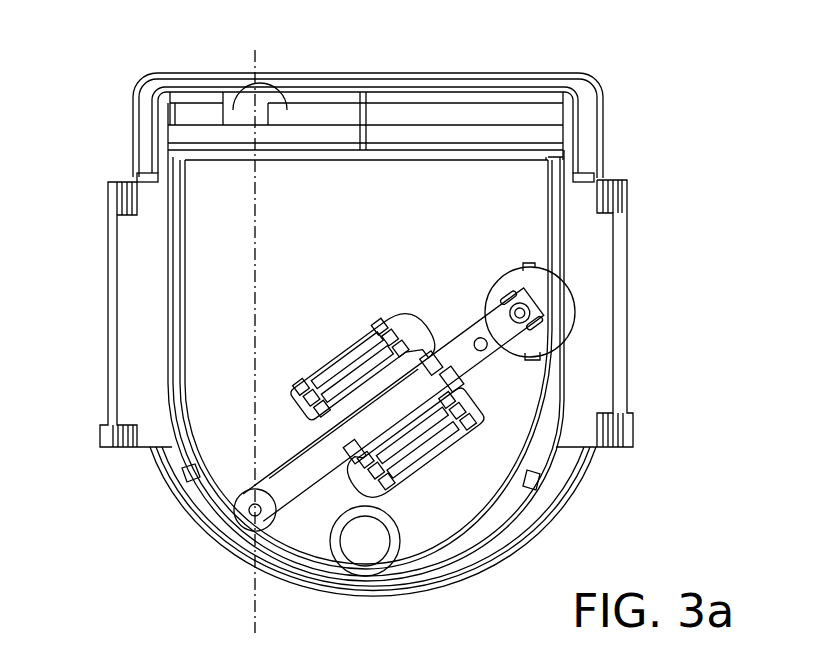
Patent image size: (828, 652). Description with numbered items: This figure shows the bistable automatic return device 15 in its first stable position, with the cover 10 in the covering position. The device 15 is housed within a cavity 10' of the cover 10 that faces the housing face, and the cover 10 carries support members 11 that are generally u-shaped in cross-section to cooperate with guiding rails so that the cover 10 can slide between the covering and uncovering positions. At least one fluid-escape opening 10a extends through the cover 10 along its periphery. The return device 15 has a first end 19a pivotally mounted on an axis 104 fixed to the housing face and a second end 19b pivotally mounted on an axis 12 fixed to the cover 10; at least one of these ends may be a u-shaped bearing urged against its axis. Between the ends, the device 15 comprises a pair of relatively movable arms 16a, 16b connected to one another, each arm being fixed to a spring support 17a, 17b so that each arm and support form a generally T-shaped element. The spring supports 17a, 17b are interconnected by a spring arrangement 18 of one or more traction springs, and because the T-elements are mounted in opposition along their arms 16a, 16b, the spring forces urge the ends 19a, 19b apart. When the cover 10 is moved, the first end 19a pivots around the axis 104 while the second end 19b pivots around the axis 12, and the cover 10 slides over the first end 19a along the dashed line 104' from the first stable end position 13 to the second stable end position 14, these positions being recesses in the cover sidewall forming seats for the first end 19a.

The cover 10 is at (368, 96).
The fluid-escape opening 10a is at (340, 112).
The cavity 10' is at (366, 365).
The support members 11 is at (120, 202).
The axis 12 is at (523, 308).
The first stable end position 13 is at (235, 536).
The second stable end position 14 is at (275, 83).
The automatic return device 15 is at (340, 302).
The arm 16a is at (287, 483).
The arm 16b is at (474, 338).
The spring support 17a is at (364, 327).
The spring support 17b is at (450, 505).
The spring arrangement 18 is at (360, 353).
The first end 19a is at (243, 488).
The second end 19b is at (500, 290).
The axis 104 is at (326, 492).
The dashed line 104' is at (209, 341).